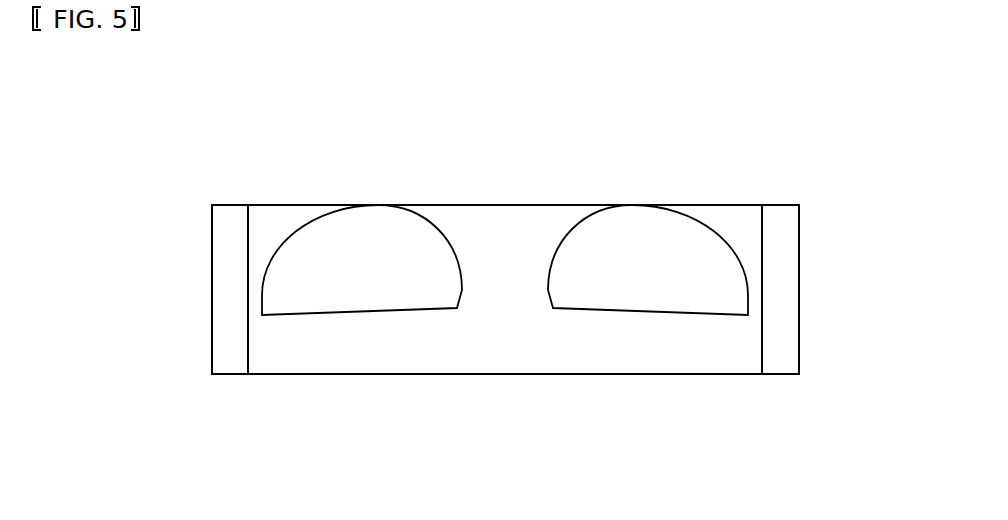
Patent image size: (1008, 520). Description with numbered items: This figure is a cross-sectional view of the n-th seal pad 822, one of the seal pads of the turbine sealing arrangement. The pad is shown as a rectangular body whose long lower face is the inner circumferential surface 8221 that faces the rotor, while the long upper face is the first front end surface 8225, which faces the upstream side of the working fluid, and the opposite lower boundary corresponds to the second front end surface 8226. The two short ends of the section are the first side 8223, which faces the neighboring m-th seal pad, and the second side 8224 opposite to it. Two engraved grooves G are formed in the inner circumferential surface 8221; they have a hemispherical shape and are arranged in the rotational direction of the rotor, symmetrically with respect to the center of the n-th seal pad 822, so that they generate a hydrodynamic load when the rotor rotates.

The n-th seal pad 822 is at (810, 132).
The inner circumferential surface 8221 is at (493, 328).
The first side 8223 is at (799, 288).
The second side 8224 is at (212, 287).
The first front end surface 8225 is at (503, 205).
The second front end surface 8226 is at (503, 377).
The groove G is at (370, 262).